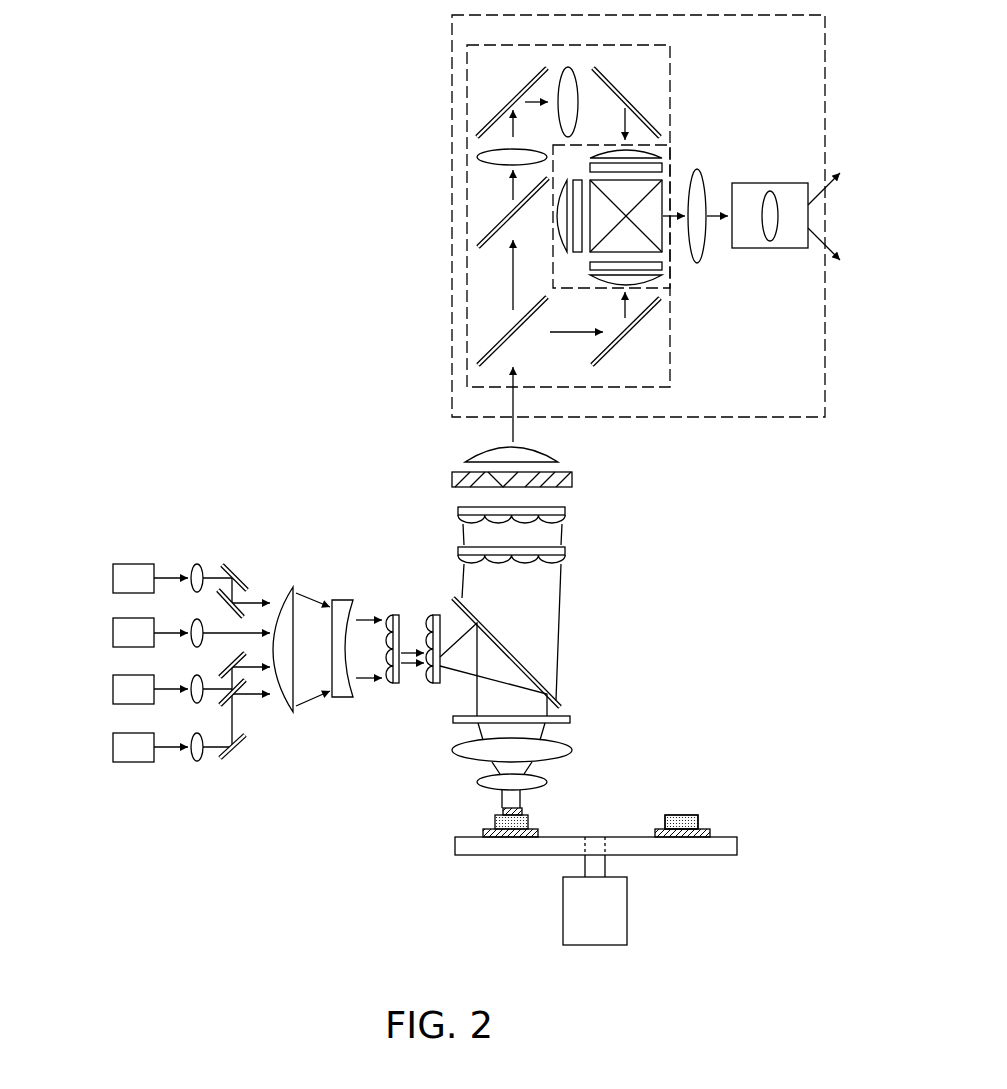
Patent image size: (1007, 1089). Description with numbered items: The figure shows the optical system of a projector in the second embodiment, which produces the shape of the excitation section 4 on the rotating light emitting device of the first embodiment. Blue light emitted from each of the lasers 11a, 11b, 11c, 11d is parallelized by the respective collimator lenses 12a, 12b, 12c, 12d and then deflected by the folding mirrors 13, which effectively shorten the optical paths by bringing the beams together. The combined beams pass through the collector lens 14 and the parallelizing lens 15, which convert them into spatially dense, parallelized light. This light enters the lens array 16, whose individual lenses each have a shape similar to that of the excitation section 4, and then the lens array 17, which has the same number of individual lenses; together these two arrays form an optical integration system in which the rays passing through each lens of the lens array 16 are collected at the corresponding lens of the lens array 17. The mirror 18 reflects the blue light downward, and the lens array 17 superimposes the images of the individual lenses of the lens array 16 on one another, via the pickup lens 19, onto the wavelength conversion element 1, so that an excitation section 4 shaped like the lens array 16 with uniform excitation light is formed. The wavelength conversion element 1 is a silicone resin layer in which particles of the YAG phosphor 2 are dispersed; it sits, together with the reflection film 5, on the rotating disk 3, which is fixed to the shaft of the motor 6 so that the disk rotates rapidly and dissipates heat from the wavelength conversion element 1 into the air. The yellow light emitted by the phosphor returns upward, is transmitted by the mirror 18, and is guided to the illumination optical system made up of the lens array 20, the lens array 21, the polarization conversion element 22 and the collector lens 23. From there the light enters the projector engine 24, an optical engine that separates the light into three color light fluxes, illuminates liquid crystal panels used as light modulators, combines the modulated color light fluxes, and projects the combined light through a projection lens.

The wavelength conversion element 1 is at (530, 815).
The YAG phosphor 2 is at (681, 814).
The rotating disk 3 is at (722, 856).
The excitation section 4 is at (503, 811).
The reflection film 5 is at (712, 833).
The motor 6 is at (618, 910).
The laser 11a is at (113, 578).
The laser 11b is at (113, 633).
The laser 11c is at (113, 689).
The laser 11d is at (113, 747).
The collimator lens 12a is at (197, 564).
The collimator lens 12b is at (195, 647).
The collimator lens 12c is at (195, 703).
The collimator lens 12d is at (197, 762).
The folding mirrors 13 is at (237, 566).
The collector lens 14 is at (293, 586).
The parallelizing lens 15 is at (343, 599).
The lens array 16 is at (396, 614).
The lens array 17 is at (437, 614).
The mirror 18 is at (562, 705).
The pickup lens 19 is at (548, 782).
The lens array 20 is at (566, 550).
The lens array 21 is at (566, 510).
The polarization conversion element 22 is at (573, 479).
The collector lens 23 is at (560, 455).
The projector engine 24 is at (451, 78).